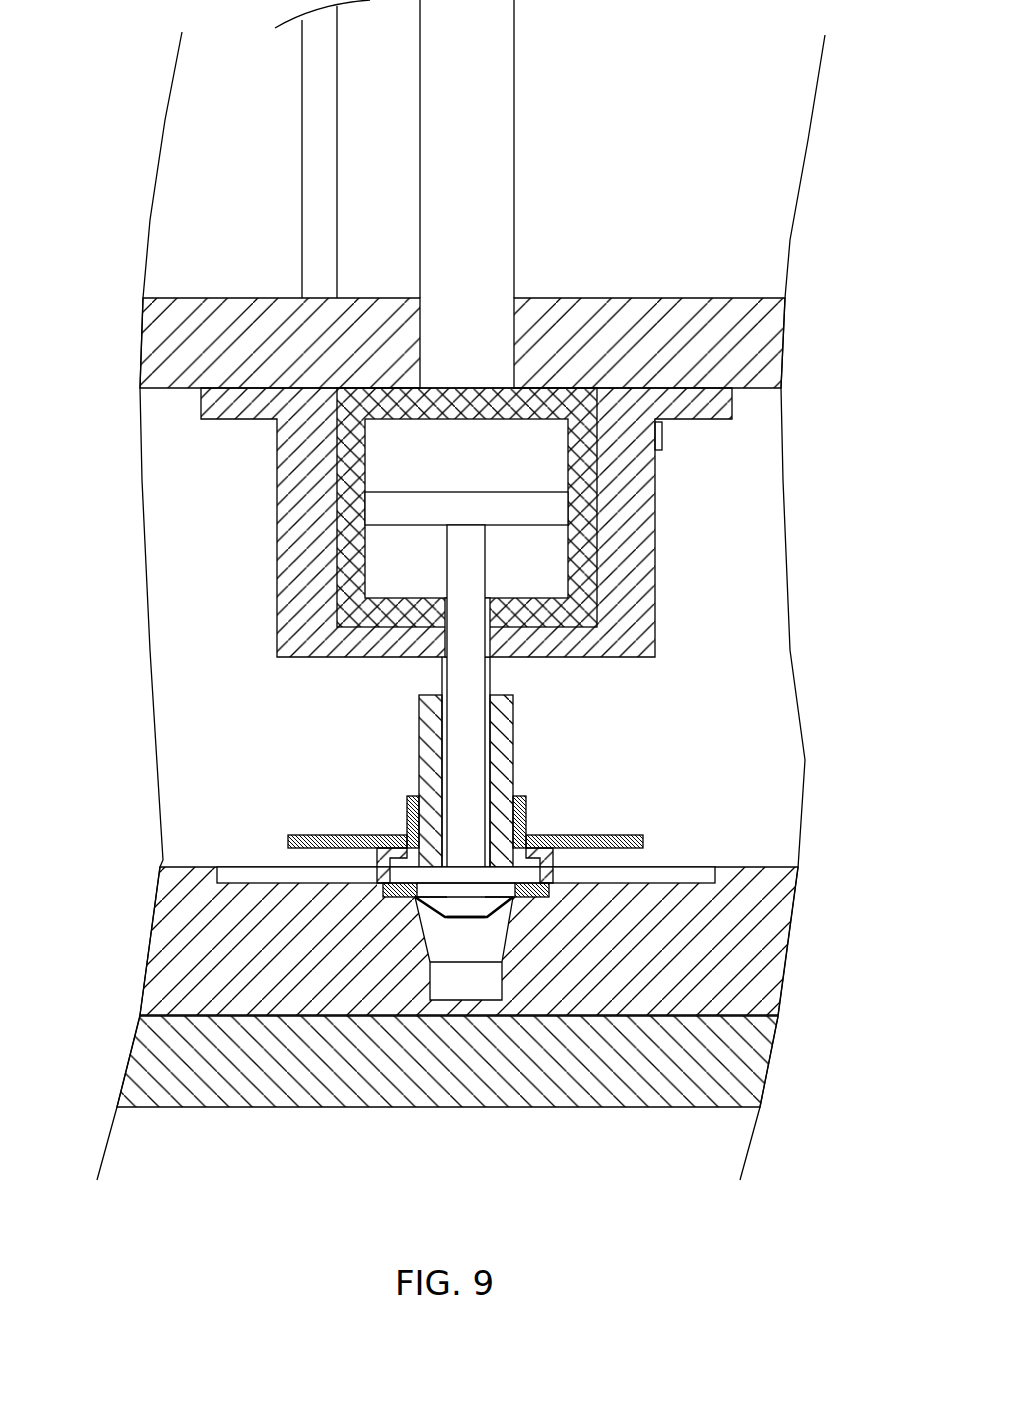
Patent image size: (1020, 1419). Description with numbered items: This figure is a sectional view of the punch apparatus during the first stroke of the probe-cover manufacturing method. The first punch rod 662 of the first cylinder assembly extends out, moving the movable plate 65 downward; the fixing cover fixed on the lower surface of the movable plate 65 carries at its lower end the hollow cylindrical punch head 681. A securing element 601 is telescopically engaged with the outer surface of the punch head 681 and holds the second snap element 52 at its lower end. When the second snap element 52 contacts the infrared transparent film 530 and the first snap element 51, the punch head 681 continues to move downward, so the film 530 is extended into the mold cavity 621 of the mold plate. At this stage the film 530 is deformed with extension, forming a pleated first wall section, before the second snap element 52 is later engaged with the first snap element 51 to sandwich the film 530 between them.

The first punch rod 662 is at (498, 142).
The movable plate 65 is at (632, 313).
The punch head 681 is at (440, 678).
The securing element 601 is at (507, 733).
The second snap element 52 is at (532, 870).
The first snap element 51 is at (553, 850).
The infrared transparent film 530 is at (610, 870).
The mold cavity 621 is at (398, 945).